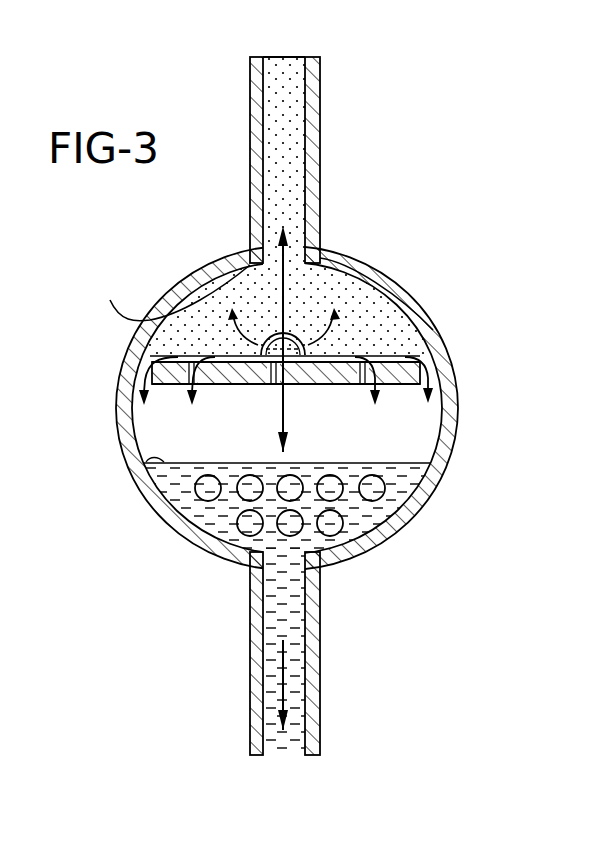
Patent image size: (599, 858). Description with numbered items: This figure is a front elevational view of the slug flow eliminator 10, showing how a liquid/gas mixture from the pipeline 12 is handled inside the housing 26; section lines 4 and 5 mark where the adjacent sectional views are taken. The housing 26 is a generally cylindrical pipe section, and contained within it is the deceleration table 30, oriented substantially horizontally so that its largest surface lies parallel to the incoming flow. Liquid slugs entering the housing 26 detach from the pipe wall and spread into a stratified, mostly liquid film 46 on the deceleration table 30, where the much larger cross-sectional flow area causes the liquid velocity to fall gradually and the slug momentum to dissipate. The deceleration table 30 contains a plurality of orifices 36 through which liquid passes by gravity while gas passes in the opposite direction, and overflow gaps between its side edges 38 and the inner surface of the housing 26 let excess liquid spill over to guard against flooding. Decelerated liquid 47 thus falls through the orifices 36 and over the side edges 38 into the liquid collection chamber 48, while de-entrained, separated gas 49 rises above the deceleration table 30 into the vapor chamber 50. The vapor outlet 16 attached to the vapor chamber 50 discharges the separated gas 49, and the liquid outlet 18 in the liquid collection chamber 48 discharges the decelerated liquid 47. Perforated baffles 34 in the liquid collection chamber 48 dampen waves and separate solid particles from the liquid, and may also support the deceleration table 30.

The section line 4- 4 is at (241, 403).
The section line 5- 5 is at (121, 340).
The slug flow eliminator 10 is at (146, 232).
The pipeline 12 is at (303, 318).
The vapor outlet 16 is at (321, 100).
The liquid outlet 18 is at (320, 673).
The housing 26 is at (437, 327).
The deceleration table 30 is at (225, 385).
The baffles 34 is at (150, 460).
The orifices 36 is at (293, 385).
The side edges 38 is at (420, 386).
The liquid film 46 is at (168, 293).
The decelerated liquid 47 is at (281, 398).
The liquid collection chamber 48 is at (376, 546).
The separated gas 49 is at (283, 282).
The vapor chamber 50 is at (385, 322).